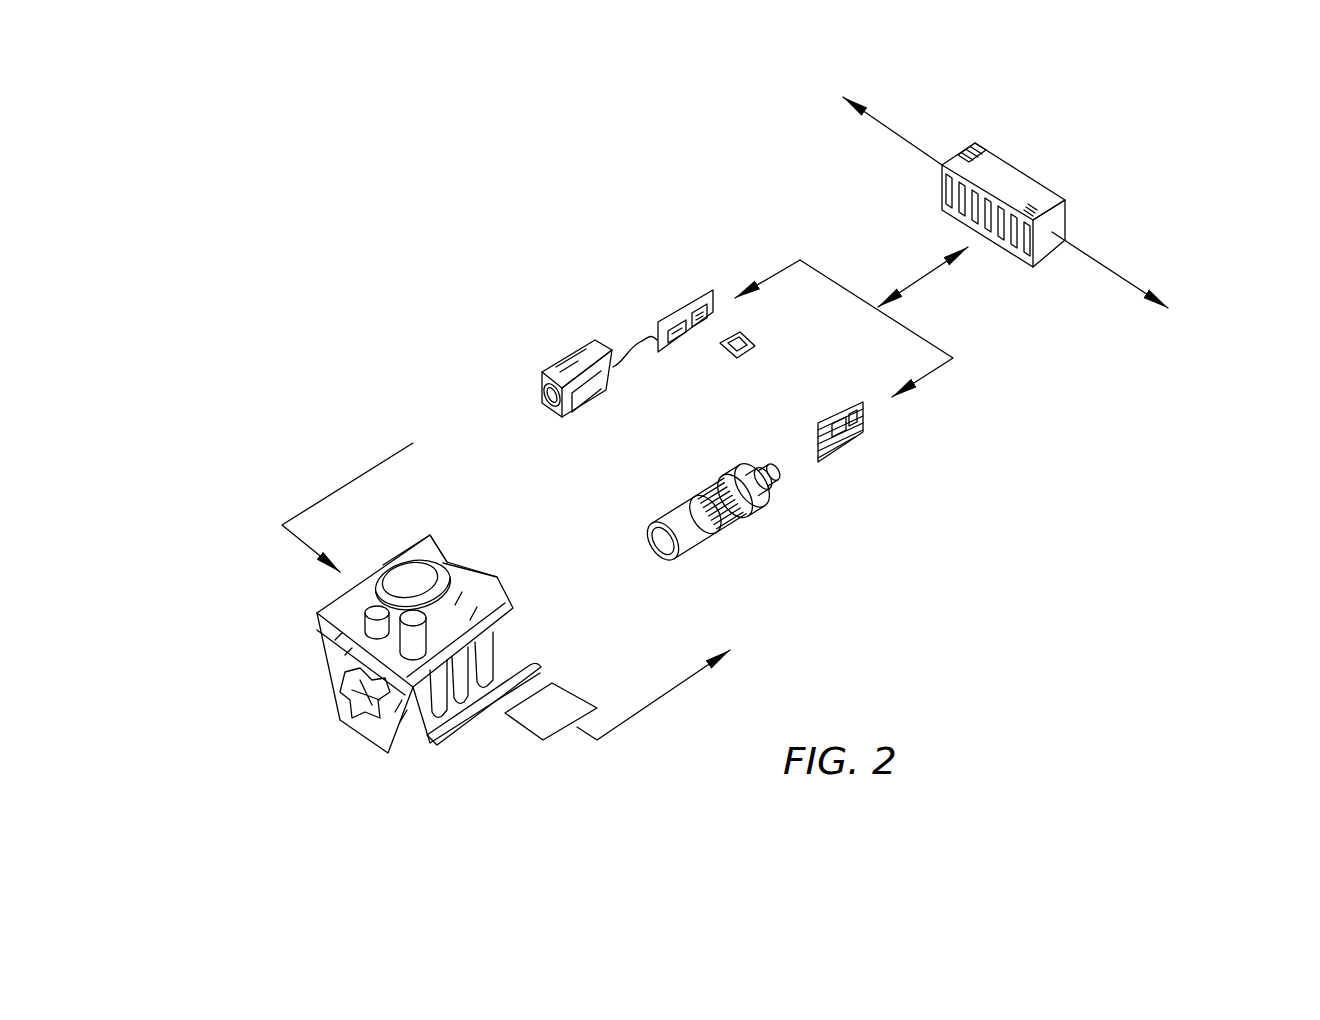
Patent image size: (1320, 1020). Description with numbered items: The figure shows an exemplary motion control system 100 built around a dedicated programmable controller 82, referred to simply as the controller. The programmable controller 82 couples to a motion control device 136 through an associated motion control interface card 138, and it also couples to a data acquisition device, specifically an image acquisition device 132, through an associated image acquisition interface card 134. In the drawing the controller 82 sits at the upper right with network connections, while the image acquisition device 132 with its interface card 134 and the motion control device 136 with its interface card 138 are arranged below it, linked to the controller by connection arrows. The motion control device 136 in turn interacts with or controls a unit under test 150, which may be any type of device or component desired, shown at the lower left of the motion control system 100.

The motion control system 100 is at (438, 112).
The programmable controller 82 is at (1030, 183).
The image acquisition device 132 is at (587, 400).
The image acquisition interface card 134 is at (677, 312).
The motion control device 136 is at (720, 538).
The motion control interface card 138 is at (847, 443).
The unit under test 150 is at (337, 687).